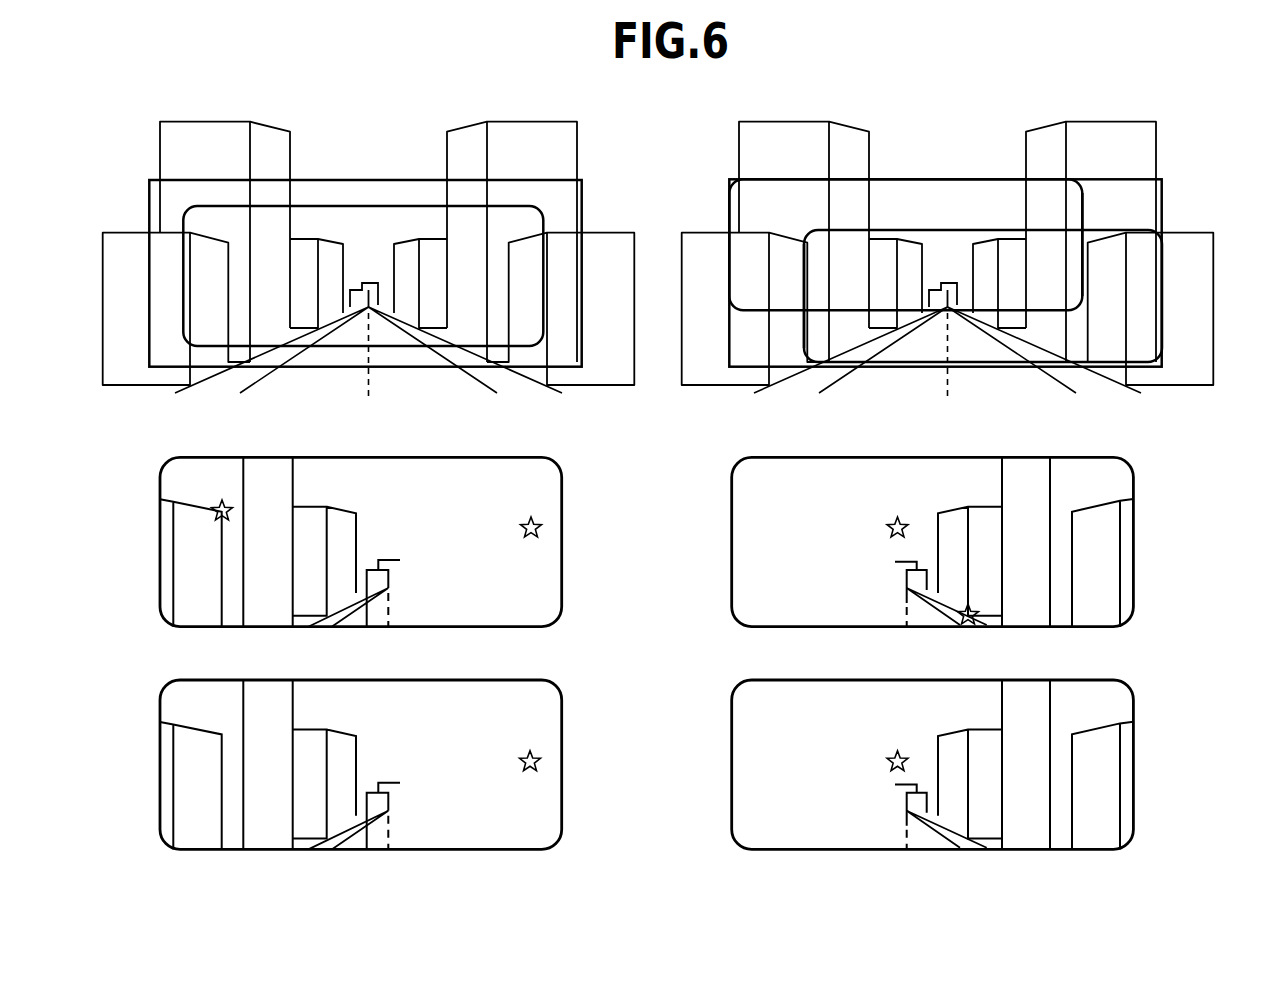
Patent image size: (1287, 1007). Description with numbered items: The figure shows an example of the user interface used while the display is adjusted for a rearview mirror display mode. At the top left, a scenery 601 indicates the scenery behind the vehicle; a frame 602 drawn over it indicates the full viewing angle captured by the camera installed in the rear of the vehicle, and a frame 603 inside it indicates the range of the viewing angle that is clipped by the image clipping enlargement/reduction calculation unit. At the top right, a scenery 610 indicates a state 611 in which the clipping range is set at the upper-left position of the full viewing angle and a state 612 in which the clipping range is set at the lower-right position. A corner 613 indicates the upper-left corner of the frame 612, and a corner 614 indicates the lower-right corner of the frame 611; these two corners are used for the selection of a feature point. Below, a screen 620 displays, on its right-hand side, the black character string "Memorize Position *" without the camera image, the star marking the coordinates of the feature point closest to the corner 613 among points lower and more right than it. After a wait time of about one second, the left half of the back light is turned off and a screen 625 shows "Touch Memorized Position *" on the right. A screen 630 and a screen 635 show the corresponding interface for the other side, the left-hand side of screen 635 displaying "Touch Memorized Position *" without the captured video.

The scenery 601 is at (365, 355).
The frame 602 is at (149, 213).
The frame 603 is at (378, 205).
The scenery 610 is at (945, 358).
The state 611 is at (763, 305).
The state 612 is at (1133, 228).
The corner 613 is at (808, 242).
The corner 614 is at (1083, 273).
The screen 620 is at (361, 558).
The screen 625 is at (361, 779).
The screen 630 is at (933, 557).
The screen 635 is at (933, 779).